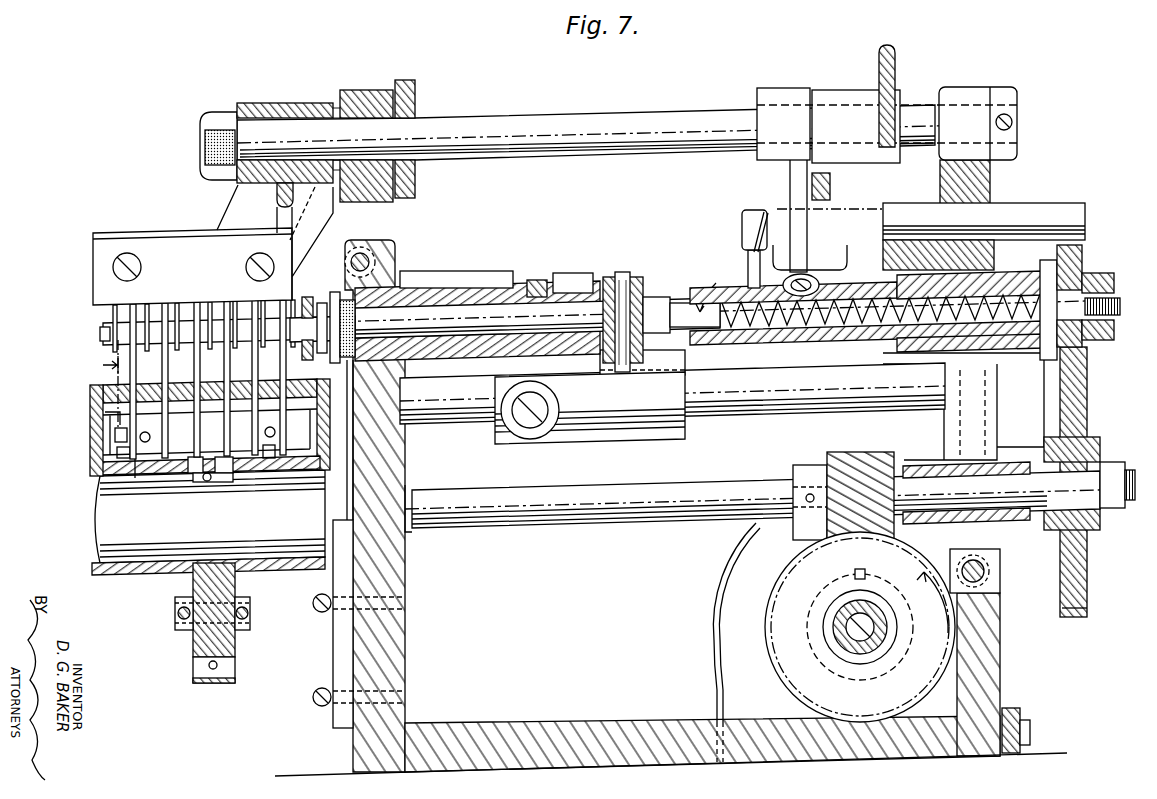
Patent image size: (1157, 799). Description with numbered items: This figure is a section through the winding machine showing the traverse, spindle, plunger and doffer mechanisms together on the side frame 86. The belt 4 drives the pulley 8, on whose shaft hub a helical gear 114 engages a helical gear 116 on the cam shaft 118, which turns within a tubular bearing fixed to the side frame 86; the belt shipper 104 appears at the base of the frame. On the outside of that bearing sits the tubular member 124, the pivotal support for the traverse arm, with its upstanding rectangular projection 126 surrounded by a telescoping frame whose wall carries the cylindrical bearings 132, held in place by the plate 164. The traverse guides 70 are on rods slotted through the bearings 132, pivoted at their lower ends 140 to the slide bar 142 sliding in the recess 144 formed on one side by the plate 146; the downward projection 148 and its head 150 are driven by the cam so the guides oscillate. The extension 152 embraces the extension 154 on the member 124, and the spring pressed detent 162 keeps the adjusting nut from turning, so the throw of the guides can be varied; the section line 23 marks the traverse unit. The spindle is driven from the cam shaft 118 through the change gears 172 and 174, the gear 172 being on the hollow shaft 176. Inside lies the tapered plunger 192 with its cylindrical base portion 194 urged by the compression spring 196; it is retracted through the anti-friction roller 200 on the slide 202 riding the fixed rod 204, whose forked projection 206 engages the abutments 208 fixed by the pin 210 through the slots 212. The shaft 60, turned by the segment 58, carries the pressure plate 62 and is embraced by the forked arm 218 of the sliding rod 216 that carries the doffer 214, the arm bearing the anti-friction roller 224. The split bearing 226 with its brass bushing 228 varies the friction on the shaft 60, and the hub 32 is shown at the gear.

The belt 4 is at (717, 675).
The pulley 8 is at (760, 690).
The section line 23 is at (97, 383).
The hub 32 is at (848, 622).
The segment 58 is at (895, 68).
The shaft 60 is at (700, 107).
The pressure plate 62 is at (180, 310).
The traverse guides 70 is at (172, 310).
The side frame 86 is at (395, 667).
The belt shipper 104 is at (1009, 710).
The helical gear 114 is at (780, 608).
The helical gear 116 is at (858, 457).
The cam shaft 118 is at (1135, 483).
The tubular member 124 is at (133, 575).
The upstanding rectangular projection 126 is at (110, 418).
The cylindrical bearings 132 is at (290, 389).
The lower ends of rods 140 is at (135, 480).
The slide bar 142 is at (272, 452).
The recess 144 is at (117, 452).
The plate 146 is at (118, 430).
The downward projection 148 is at (200, 470).
The head 150 is at (210, 480).
The extension 152 is at (178, 622).
The extension 154 is at (200, 643).
The spring pressed detent 162 is at (208, 665).
The plate 164 is at (107, 417).
The gear 172 is at (1084, 254).
The gear 174 is at (1087, 408).
The hollow shaft 176 is at (710, 345).
The tapered plunger 192 is at (360, 325).
The cylindrical base portion 194 is at (490, 318).
The compression spring 196 is at (847, 320).
The anti-friction roller 200 is at (528, 440).
The slide 202 is at (668, 439).
The fixed rod 204 is at (794, 409).
The forked projection 206 is at (570, 273).
The abutments 208 is at (645, 280).
The pin 210 is at (623, 272).
The slots 212 is at (673, 343).
The doffer 214 is at (310, 296).
The sliding rod 216 is at (1040, 208).
The forked arm 218 is at (784, 95).
The anti-friction roller 224 is at (783, 273).
The split bearing 226 is at (352, 102).
The brass bushing 228 is at (417, 92).